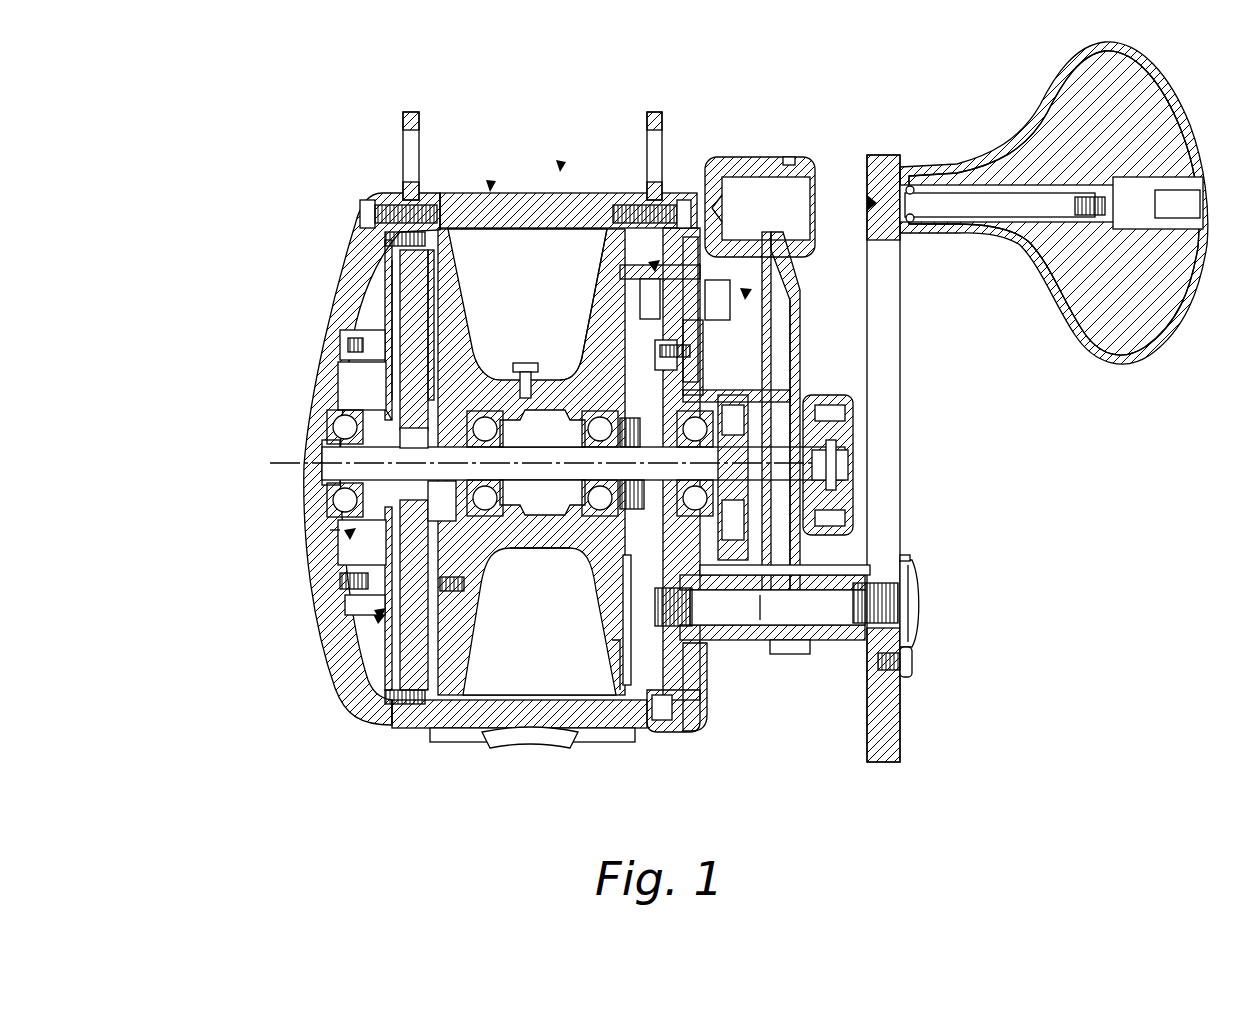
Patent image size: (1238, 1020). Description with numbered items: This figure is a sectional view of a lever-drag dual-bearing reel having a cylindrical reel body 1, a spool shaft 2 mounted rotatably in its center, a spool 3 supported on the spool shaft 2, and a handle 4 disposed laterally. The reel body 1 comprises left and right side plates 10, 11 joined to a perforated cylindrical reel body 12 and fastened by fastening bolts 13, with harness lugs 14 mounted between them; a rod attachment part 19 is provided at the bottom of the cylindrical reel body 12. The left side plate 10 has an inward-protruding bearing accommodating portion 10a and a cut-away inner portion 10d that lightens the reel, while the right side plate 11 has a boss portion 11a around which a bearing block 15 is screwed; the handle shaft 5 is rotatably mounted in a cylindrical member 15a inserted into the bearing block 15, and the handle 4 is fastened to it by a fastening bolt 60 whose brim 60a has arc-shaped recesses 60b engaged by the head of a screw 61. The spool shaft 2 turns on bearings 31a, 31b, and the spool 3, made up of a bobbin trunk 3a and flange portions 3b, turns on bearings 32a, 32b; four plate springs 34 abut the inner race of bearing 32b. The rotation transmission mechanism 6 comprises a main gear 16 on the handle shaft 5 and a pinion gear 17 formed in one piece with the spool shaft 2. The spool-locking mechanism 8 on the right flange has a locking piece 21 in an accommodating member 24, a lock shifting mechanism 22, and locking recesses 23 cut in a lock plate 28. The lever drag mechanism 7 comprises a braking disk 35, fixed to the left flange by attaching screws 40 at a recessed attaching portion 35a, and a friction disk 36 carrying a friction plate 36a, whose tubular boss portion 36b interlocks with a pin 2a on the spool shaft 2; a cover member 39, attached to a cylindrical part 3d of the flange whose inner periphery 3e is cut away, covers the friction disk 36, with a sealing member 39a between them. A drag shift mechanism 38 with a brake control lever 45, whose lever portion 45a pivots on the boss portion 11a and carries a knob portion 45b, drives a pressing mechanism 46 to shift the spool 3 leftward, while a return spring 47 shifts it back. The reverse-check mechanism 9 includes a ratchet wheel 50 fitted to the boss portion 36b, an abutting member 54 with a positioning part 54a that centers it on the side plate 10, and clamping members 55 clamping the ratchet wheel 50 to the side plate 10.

The reel body 1 is at (561, 164).
The spool shaft 2 is at (563, 478).
The pin 2a is at (428, 438).
The spool 3 is at (519, 565).
The bobbin trunk 3a is at (547, 568).
The flange portions 3b is at (565, 652).
The cylindrical part 3d is at (437, 198).
The inner periphery 3e is at (422, 742).
The handle 4 is at (890, 345).
The handle shaft 5 is at (832, 642).
The rotation transmission mechanism 6 is at (652, 732).
The lever drag mechanism 7 is at (375, 618).
The spool-locking mechanism 8 is at (653, 264).
The reverse-check mechanism 9 is at (345, 582).
The left side plate 10 is at (333, 692).
The bearing accommodating portion 10a is at (334, 534).
The inner portion 10d is at (380, 720).
The right side plate 11 is at (684, 700).
The boss portion 11a is at (760, 372).
The cylindrical reel body 12 is at (491, 184).
The fastening bolts 13 is at (376, 202).
The harness lugs 14 is at (413, 112).
The bearing block 15 is at (720, 628).
The cylindrical member 15a is at (795, 656).
The main gear 16 is at (690, 728).
The pinion gear 17 is at (646, 440).
The rod attachment part 19 is at (535, 748).
The locking piece 21 is at (708, 283).
The lock shifting mechanism 22 is at (746, 292).
The locking recesses 23 is at (630, 632).
The accommodating member 24 is at (650, 355).
The lock plate 28 is at (614, 650).
The bearing 31a is at (330, 510).
The bearing 31b is at (635, 514).
The bearing 32a is at (495, 360).
The bearing 32b is at (576, 365).
The plate springs 34 is at (582, 426).
The braking disk 35 is at (428, 270).
The attaching portion 35a is at (428, 322).
The friction disk 36 is at (386, 280).
The friction plate 36a is at (392, 300).
The boss portion 36b is at (385, 490).
The drag shift mechanism 38 is at (806, 405).
The cover member 39 is at (340, 342).
The sealing member 39a is at (386, 418).
The attaching screws 40 is at (466, 590).
The brake control lever 45 is at (798, 270).
The lever portion 45a is at (803, 302).
The knob portion 45b is at (794, 160).
The pressing mechanism 46 is at (850, 465).
The return spring 47 is at (452, 494).
The ratchet wheel 50 is at (340, 378).
The abutting member 54 is at (324, 445).
The positioning part 54a is at (348, 542).
The clamping members 55 is at (378, 618).
The fastening bolt 60 is at (921, 605).
The brim 60a is at (920, 585).
The arc-shaped recesses 60b is at (908, 558).
The screw 61 is at (913, 666).